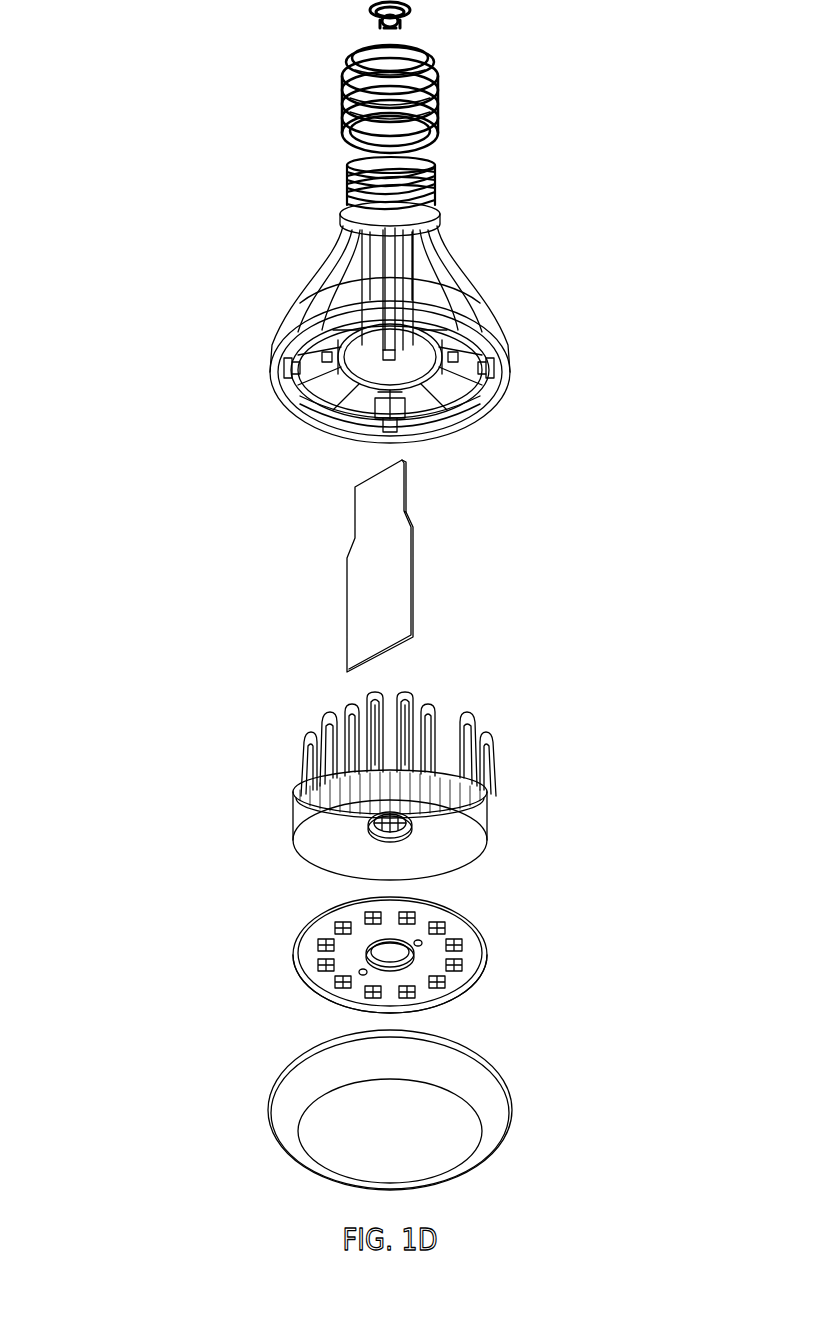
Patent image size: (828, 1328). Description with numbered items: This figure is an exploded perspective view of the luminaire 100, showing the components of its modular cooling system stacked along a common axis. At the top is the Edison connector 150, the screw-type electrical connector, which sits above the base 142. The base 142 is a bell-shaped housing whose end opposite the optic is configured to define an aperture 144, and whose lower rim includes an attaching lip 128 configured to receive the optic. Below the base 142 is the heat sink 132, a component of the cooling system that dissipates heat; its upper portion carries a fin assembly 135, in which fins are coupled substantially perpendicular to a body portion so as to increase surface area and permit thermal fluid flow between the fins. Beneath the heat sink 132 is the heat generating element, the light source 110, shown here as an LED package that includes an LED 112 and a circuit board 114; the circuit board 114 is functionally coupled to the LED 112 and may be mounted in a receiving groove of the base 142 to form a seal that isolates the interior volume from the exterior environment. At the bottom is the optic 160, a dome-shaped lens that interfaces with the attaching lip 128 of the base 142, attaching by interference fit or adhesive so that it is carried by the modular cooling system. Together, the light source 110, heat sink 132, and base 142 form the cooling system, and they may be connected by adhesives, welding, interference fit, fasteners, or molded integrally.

The luminaire 100 is at (158, 86).
The Edison connector 150 is at (438, 78).
The base 142 is at (528, 278).
The aperture 144 is at (475, 365).
The attaching lip 128 is at (272, 365).
The fin assembly 135 is at (372, 692).
The heat sink 132 is at (528, 795).
The circuit board 114 is at (335, 910).
The light source 110 is at (538, 954).
The LED 112 is at (335, 980).
The optic 160 is at (568, 1129).